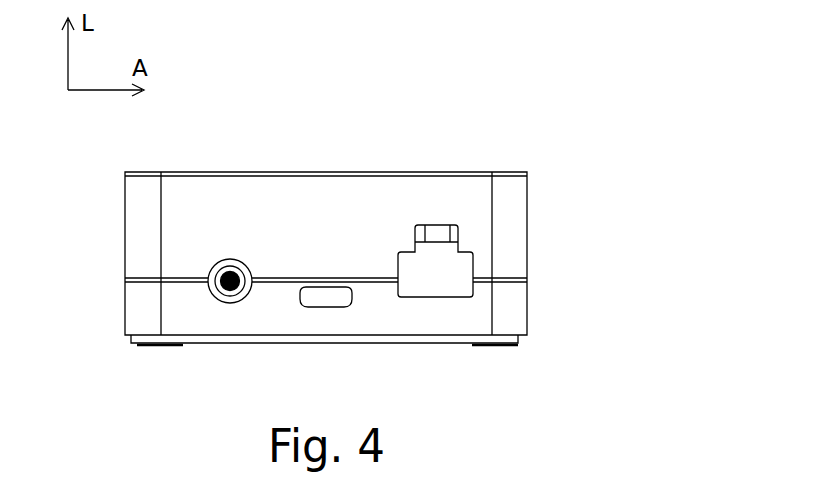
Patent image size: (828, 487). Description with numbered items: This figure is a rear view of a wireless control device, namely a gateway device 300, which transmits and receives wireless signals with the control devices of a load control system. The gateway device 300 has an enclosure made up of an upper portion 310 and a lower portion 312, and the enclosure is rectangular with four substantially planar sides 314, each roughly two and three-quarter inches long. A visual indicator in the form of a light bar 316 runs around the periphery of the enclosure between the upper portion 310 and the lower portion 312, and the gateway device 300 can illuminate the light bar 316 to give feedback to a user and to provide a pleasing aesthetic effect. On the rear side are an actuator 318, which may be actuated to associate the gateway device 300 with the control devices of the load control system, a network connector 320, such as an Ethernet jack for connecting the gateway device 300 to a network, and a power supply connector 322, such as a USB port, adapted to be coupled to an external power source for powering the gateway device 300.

The gateway device 300 is at (490, 118).
The upper portion 310 is at (367, 202).
The lower portion 312 is at (436, 318).
The sides 314 is at (353, 244).
The light bar 316 is at (122, 278).
The actuator 318 is at (243, 264).
The network connector 320 is at (452, 264).
The power supply connector 322 is at (327, 296).